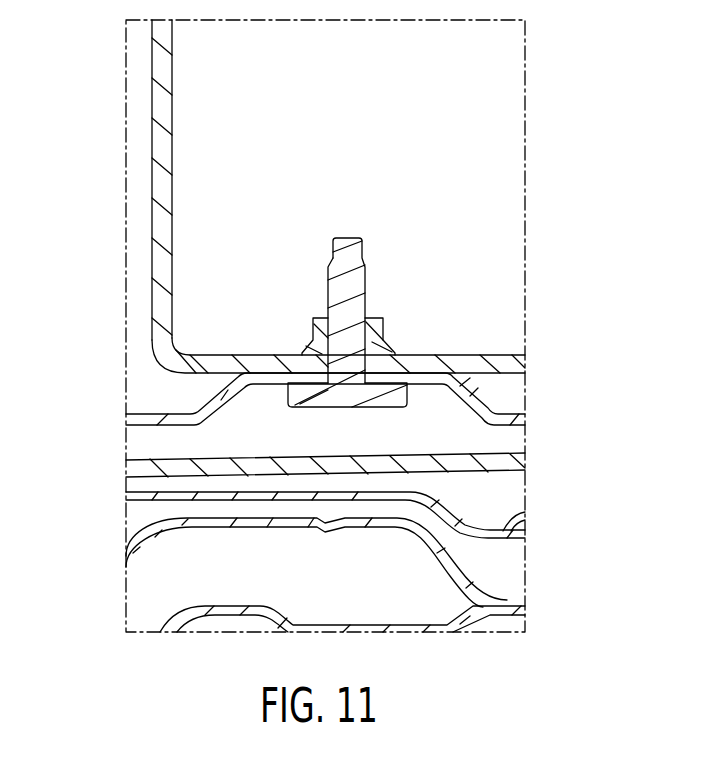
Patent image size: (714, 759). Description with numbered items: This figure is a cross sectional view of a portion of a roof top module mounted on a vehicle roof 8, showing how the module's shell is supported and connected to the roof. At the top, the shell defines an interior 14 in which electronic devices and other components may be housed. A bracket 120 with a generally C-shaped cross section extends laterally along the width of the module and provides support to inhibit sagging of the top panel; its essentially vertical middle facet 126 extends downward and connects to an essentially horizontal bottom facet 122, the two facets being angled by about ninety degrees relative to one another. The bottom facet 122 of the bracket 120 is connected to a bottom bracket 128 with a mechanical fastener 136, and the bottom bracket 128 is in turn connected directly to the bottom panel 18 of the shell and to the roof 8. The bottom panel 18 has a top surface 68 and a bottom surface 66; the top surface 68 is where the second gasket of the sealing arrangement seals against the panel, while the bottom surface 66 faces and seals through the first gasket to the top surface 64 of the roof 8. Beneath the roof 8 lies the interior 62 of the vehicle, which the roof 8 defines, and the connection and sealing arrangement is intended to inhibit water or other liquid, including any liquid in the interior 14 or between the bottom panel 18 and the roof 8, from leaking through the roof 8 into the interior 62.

The interior 14 is at (391, 120).
The bracket 120 is at (285, 196).
The middle facet 126 is at (165, 107).
The bottom facet 122 is at (433, 357).
The mechanical fastener 136 is at (356, 297).
The bottom bracket 128 is at (153, 414).
The bottom panel 18 is at (350, 506).
The top surface of the bottom panel 68 is at (455, 445).
The bottom surface of the bottom panel 66 is at (386, 477).
The top surface of the roof 64 is at (477, 509).
The roof 8 is at (525, 516).
The interior of the vehicle 62 is at (496, 624).